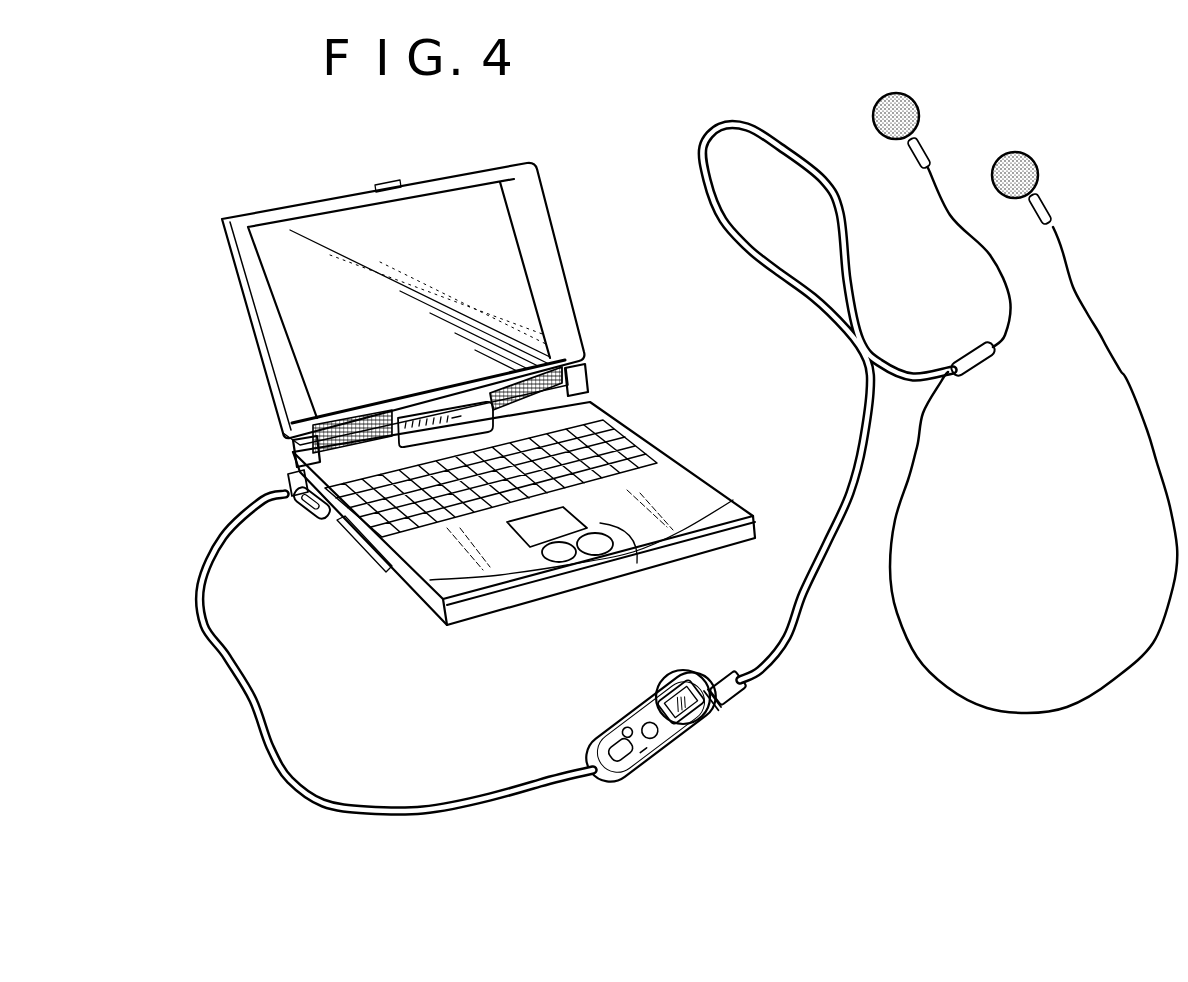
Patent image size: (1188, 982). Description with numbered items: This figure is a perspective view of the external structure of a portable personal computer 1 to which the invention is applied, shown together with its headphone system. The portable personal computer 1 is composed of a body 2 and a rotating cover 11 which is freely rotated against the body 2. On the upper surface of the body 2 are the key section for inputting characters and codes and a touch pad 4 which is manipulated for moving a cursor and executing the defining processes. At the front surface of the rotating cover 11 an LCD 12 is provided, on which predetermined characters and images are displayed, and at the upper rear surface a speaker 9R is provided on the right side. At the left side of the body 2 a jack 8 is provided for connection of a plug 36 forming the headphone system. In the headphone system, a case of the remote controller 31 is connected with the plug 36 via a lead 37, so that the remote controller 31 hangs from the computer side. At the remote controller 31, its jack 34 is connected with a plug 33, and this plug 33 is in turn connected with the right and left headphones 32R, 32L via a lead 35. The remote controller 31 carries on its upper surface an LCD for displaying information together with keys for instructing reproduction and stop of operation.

The portable personal computer 1 is at (662, 432).
The body 2 is at (693, 485).
The touch pad 4 is at (582, 525).
The jack 8 is at (297, 482).
The speaker 9R is at (578, 367).
The rotating cover 11 is at (543, 272).
The LCD 12 is at (494, 215).
The remote controller 31 is at (660, 757).
The left headphone 32L is at (918, 107).
The right headphone 32R is at (1027, 160).
The plug 33 is at (740, 687).
The jack 34 is at (725, 698).
The lead 35 is at (798, 615).
The plug 36 is at (312, 510).
The lead 37 is at (520, 802).